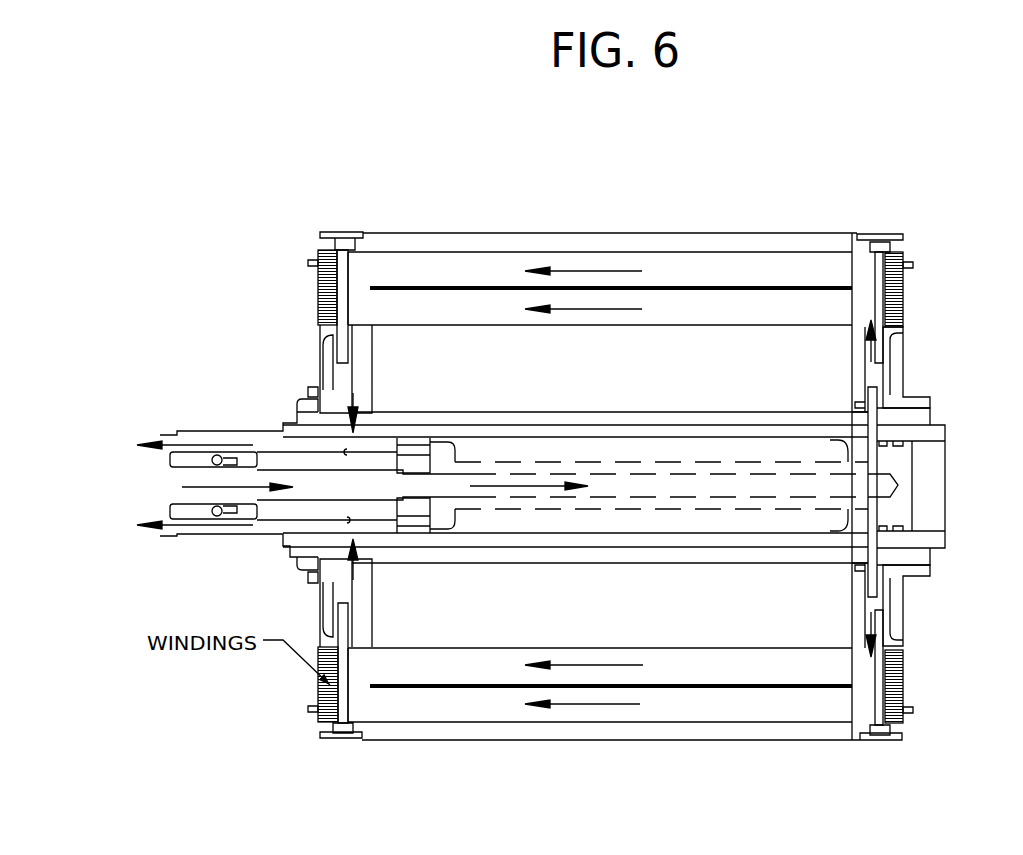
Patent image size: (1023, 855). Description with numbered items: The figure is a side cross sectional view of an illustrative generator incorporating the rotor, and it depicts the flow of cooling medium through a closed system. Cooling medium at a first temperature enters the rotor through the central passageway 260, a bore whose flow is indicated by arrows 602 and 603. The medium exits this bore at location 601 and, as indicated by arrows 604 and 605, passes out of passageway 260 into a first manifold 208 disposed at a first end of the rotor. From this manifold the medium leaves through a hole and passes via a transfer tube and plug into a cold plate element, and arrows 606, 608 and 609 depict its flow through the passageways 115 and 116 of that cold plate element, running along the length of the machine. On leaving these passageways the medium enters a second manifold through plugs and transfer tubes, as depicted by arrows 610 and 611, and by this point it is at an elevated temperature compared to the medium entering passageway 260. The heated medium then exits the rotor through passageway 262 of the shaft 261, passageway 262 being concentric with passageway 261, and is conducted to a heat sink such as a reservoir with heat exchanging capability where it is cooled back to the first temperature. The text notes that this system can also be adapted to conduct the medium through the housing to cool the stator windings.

The passageway 115 is at (420, 265).
The passageway 116 is at (450, 657).
The first manifold 208 is at (852, 375).
The passageway 260 is at (205, 485).
The shaft 261 is at (215, 430).
The passageway 262 is at (165, 451).
The location 601 is at (890, 473).
The arrow 602 is at (212, 487).
The arrow 603 is at (513, 488).
The arrow 604 is at (873, 373).
The arrow 605 is at (873, 598).
The arrow 606 is at (583, 268).
The arrow 608 is at (588, 310).
The arrow 609 is at (583, 707).
The arrow 610 is at (350, 375).
The arrow 611 is at (348, 596).